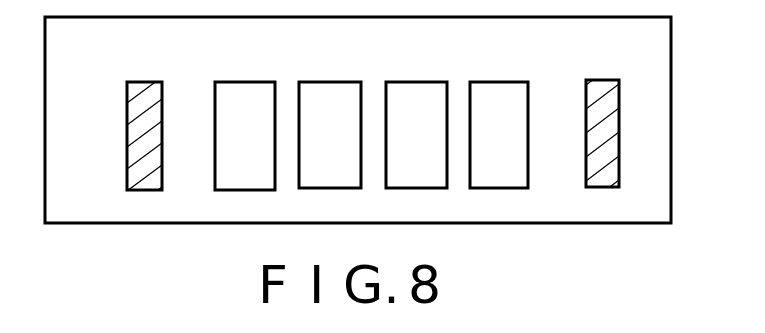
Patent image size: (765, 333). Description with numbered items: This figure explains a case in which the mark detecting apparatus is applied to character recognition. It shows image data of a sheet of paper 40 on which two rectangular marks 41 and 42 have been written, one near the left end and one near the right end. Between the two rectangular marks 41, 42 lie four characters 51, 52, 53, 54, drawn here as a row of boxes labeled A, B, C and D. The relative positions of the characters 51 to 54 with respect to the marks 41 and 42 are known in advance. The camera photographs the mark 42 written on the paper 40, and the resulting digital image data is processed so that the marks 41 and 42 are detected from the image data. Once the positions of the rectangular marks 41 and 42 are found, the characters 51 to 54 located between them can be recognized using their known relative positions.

The paper 40 is at (612, 224).
The rectangular mark 41 is at (143, 82).
The rectangular mark 42 is at (604, 79).
The character 51 is at (243, 82).
The character 52 is at (329, 82).
The character 53 is at (413, 82).
The character 54 is at (499, 82).